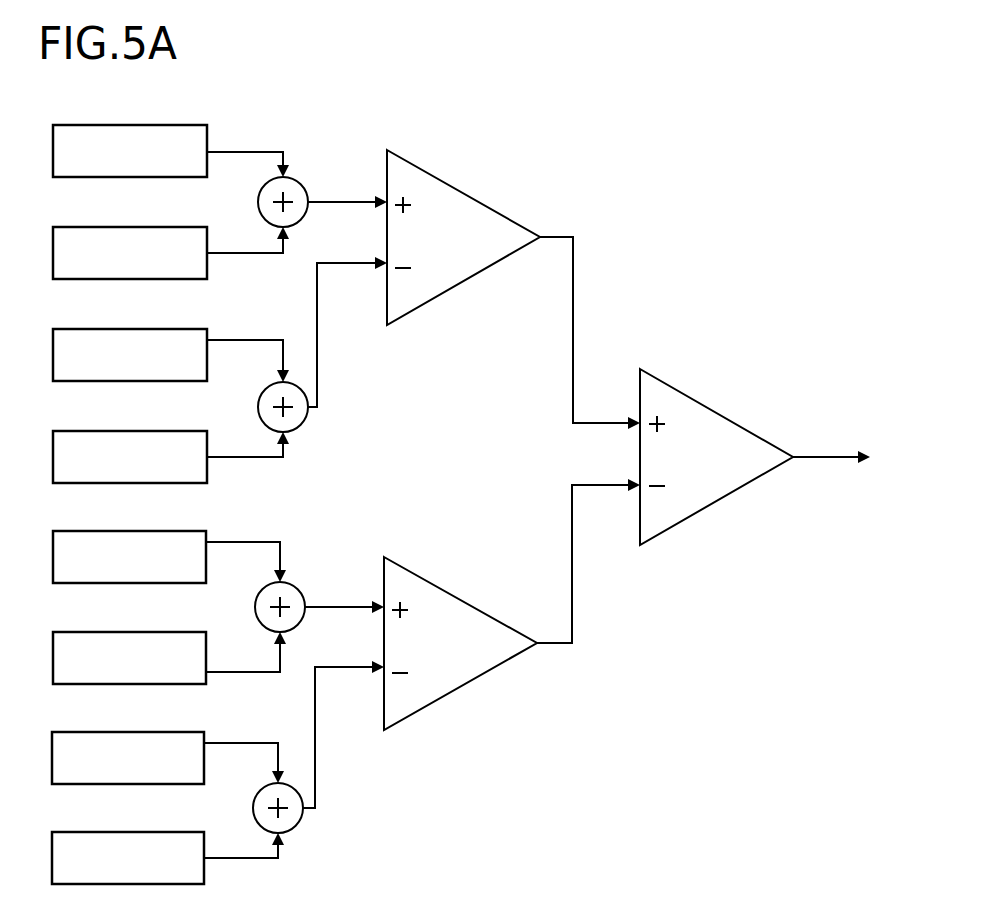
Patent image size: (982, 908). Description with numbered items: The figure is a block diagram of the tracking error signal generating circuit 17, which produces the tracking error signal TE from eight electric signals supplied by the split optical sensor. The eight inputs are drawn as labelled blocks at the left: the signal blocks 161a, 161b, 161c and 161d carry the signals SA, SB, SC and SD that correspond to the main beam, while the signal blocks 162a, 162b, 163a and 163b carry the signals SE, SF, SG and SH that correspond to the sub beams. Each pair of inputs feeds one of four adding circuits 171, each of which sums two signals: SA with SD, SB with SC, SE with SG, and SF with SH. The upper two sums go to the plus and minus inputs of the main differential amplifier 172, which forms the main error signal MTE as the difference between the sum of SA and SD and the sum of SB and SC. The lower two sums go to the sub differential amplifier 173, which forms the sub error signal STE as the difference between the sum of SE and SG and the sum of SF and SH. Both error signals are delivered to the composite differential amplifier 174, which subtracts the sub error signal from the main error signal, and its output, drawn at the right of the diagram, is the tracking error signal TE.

The tracking error signal generating circuit 17 is at (670, 230).
The signal SA input (photodetector region A signal) 161a is at (145, 126).
The signal SB input (photodetector region B signal) 161b is at (145, 330).
The signal SC input (photodetector region C signal) 161c is at (145, 432).
The signal SD input (photodetector region D signal) 161d is at (145, 228).
The signal SE input 162a is at (143, 532).
The signal SF input 162b is at (142, 733).
The signal SG input 163a is at (143, 633).
The signal SH input 163b is at (142, 833).
The adding circuit 171 is at (304, 192).
The main differential amplifier 172 is at (473, 197).
The sub differential amplifier 173 is at (447, 590).
The composite differential amplifier 174 is at (717, 412).